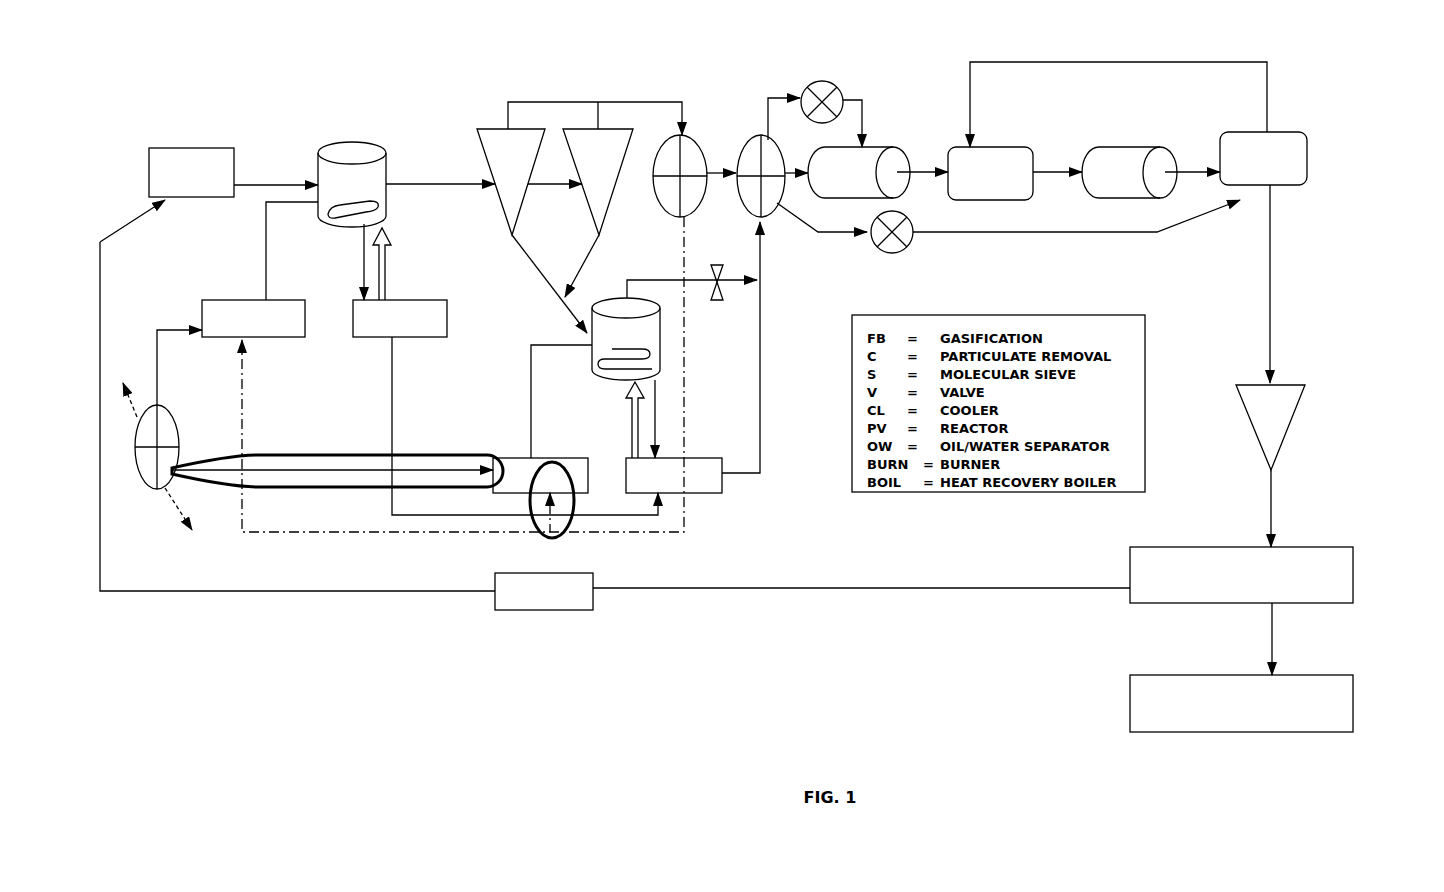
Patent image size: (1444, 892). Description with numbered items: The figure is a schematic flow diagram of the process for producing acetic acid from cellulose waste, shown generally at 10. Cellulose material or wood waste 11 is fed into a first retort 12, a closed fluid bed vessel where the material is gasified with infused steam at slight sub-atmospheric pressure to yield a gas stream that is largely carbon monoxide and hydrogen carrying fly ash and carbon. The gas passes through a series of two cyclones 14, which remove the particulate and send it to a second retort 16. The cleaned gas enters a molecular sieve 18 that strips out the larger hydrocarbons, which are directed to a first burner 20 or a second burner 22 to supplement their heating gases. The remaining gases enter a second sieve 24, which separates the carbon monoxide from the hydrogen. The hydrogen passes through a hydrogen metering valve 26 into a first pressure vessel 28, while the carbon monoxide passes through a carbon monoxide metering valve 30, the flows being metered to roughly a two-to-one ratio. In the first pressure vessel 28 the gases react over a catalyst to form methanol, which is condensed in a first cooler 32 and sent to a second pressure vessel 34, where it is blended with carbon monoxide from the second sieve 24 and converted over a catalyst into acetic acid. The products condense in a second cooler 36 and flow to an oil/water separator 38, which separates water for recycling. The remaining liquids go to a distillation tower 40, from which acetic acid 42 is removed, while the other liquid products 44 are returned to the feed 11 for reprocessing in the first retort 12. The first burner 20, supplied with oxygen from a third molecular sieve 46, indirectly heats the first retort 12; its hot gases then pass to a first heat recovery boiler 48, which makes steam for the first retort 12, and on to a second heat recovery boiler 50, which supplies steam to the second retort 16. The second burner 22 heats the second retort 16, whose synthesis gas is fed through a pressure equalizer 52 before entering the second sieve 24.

The process for producing acetic acid 10 is at (1137, 40).
The cellulose material or wood waste 11 is at (187, 147).
The first retort 12 is at (350, 140).
The cyclones 14 is at (522, 202).
The second retort 16 is at (610, 300).
The molecular sieve 18 is at (698, 147).
The first burner 20 is at (277, 300).
The second burner 22 is at (557, 458).
The second sieve 24 is at (782, 163).
The hydrogen metering valve 26 is at (840, 93).
The first pressure vessel 28 is at (868, 145).
The carbon monoxide metering valve 30 is at (867, 243).
The first cooler 32 is at (985, 147).
The second pressure vessel 34 is at (1122, 147).
The second cooler 36 is at (1285, 133).
The oil/water separator 38 is at (1287, 428).
The distillation tower 40 is at (1352, 572).
The acetic acid 42 is at (1323, 695).
The other liquid products 44 is at (597, 587).
The third molecular sieve 46 is at (183, 462).
The first heat recovery boiler 48 is at (410, 300).
The second heat recovery boiler 50 is at (703, 458).
The pressure equalizer 52 is at (717, 267).